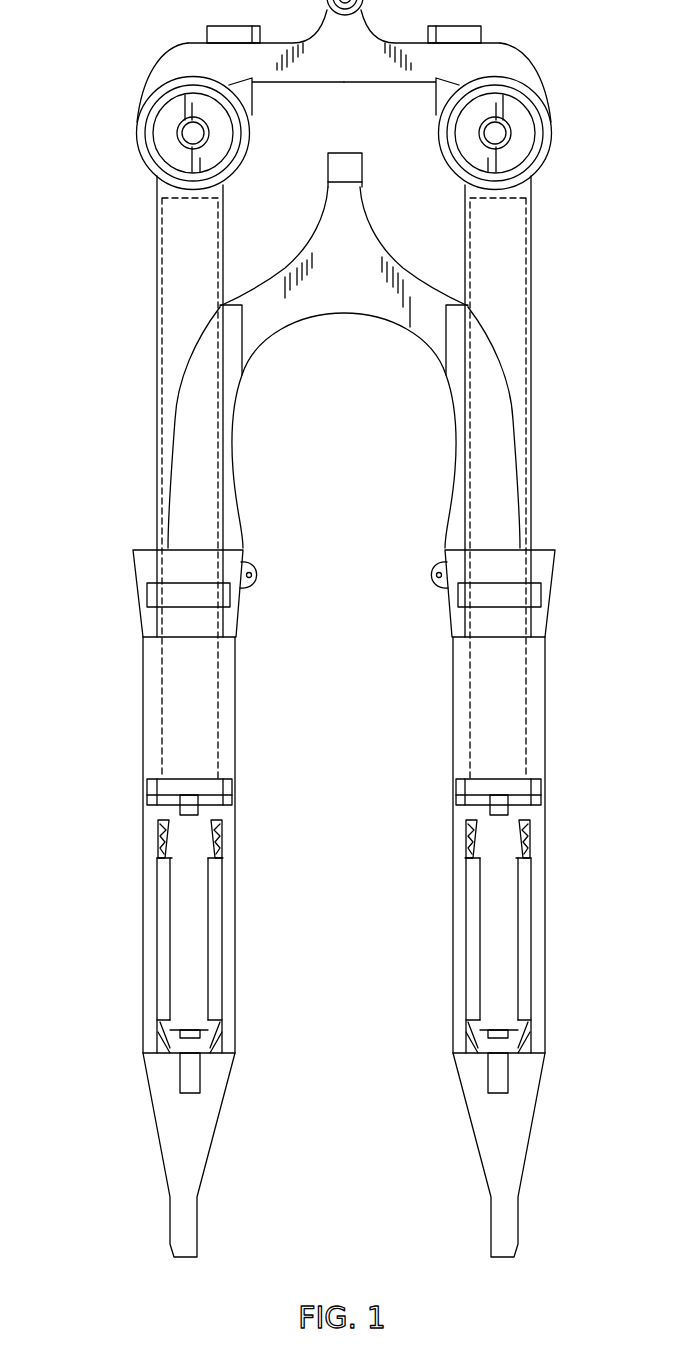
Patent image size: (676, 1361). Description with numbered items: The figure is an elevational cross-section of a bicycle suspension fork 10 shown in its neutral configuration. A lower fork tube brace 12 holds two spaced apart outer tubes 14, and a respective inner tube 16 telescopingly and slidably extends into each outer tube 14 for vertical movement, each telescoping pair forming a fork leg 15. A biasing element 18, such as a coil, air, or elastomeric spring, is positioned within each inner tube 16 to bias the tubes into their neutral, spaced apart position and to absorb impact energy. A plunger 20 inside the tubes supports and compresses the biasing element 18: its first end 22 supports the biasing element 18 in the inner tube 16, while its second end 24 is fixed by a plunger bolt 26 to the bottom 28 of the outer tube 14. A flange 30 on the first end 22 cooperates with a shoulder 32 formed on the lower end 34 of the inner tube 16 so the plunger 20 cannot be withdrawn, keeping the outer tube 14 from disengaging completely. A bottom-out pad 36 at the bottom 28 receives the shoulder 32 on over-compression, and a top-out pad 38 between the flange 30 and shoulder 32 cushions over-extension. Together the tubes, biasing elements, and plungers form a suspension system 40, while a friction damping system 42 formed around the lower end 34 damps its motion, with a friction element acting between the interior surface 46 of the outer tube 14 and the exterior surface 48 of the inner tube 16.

The suspension fork 10 is at (103, 442).
The lower fork tube brace 12 is at (410, 327).
The outer tube 14 is at (235, 782).
The fork leg 15 is at (410, 573).
The inner tube 16 is at (236, 447).
The biasing element 18 is at (224, 234).
The plunger 20 is at (175, 945).
The first end 22 is at (152, 868).
The second end 24 is at (212, 996).
The plunger bolt 26 is at (185, 1068).
The bottom 28 is at (230, 1156).
The flange 30 is at (165, 789).
The shoulder 32 is at (230, 860).
The lower end 34 is at (165, 855).
The bottom-out pad 36 is at (165, 1028).
The top-out pad 38 is at (216, 832).
The suspension system 40 is at (128, 543).
The friction damping system 42 is at (258, 800).
The interior surface 46 is at (236, 717).
The exterior surface 48 is at (240, 688).